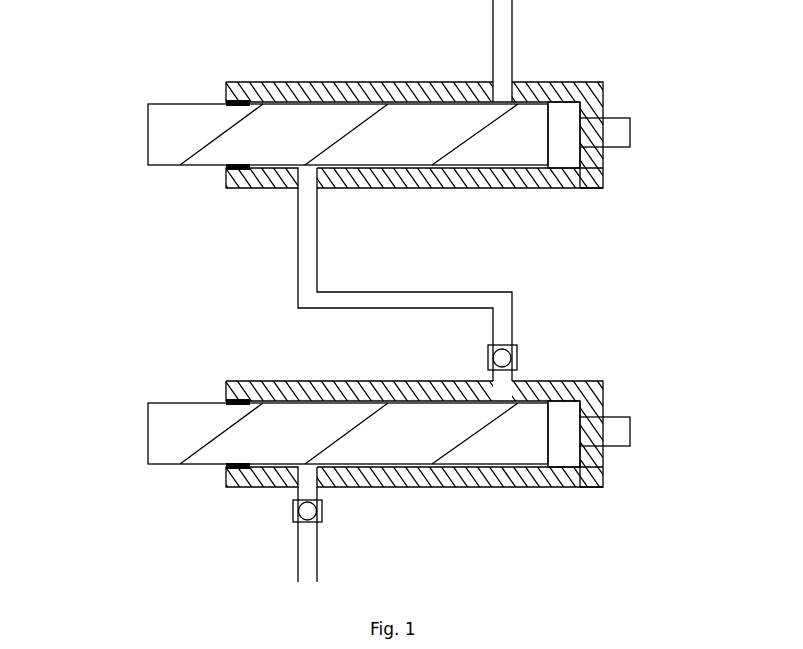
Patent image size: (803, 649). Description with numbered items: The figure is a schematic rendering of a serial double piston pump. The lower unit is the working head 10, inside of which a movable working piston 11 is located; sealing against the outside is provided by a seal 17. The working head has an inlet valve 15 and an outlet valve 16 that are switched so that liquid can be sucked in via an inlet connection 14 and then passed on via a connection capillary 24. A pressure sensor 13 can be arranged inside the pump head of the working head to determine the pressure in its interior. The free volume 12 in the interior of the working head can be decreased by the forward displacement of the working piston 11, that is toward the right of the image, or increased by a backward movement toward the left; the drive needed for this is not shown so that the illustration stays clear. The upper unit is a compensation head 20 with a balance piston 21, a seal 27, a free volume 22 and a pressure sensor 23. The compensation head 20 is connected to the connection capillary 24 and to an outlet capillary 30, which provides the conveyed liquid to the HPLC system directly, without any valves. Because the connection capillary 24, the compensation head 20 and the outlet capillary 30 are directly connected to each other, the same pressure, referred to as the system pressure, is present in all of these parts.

The working head 10 is at (431, 461).
The working piston 11 is at (493, 447).
The free volume 12 is at (565, 455).
The pressure sensor 13 is at (612, 430).
The inlet connection 14 is at (305, 560).
The inlet valve 15 is at (293, 503).
The outlet valve 16 is at (520, 358).
The seal 17 is at (226, 391).
The compensation head 20 is at (429, 144).
The balance piston 21 is at (492, 145).
The free volume 22 is at (565, 155).
The pressure sensor 23 is at (612, 129).
The connection capillary 24 is at (300, 240).
The seal 27 is at (226, 92).
The outlet capillary 30 is at (503, 10).